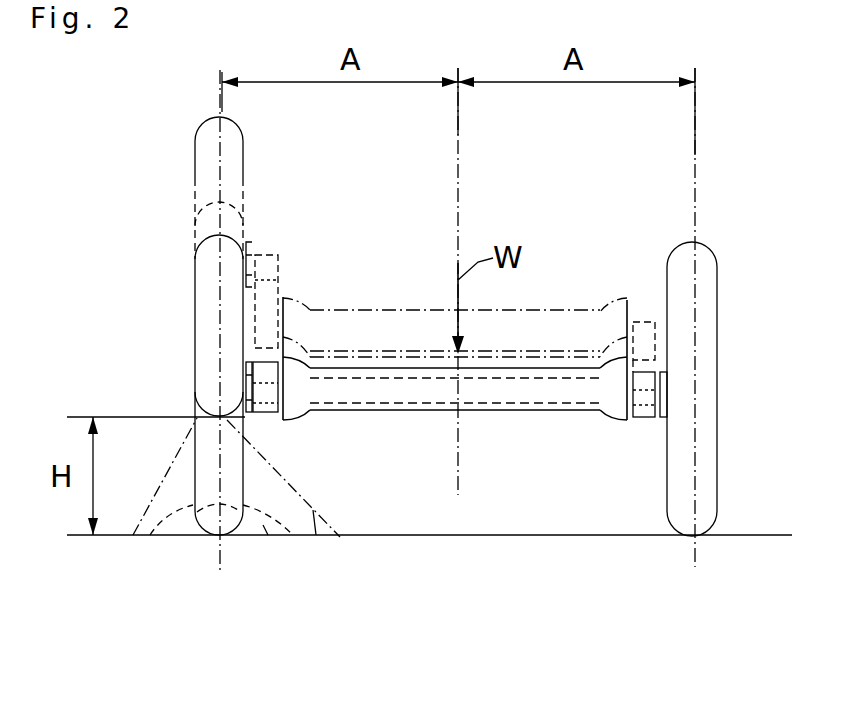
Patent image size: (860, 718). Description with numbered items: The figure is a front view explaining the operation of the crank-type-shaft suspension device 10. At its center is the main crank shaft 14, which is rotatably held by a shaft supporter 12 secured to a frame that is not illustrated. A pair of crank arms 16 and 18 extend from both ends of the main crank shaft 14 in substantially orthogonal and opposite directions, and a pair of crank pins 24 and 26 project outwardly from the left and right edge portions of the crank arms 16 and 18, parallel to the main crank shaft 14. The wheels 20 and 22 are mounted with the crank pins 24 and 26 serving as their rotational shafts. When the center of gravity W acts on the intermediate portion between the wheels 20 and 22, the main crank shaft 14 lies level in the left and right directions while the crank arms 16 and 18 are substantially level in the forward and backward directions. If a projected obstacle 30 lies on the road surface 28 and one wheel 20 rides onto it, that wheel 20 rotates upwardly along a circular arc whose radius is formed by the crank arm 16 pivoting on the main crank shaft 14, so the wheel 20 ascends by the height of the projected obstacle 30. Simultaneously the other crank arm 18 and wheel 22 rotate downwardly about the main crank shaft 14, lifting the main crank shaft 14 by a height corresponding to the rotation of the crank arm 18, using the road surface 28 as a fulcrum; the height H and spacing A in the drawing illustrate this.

The suspension device 10 is at (742, 160).
The shaft supporter 12 is at (584, 306).
The main crank shaft 14 is at (507, 393).
The crank arm 16 is at (268, 285).
The crank arm 18 is at (645, 362).
The wheel 20 is at (206, 181).
The wheel 22 is at (707, 282).
The crank pin 24 is at (250, 252).
The crank pin 26 is at (660, 393).
The road surface 28 is at (750, 537).
The projected obstacle 30 is at (315, 510).